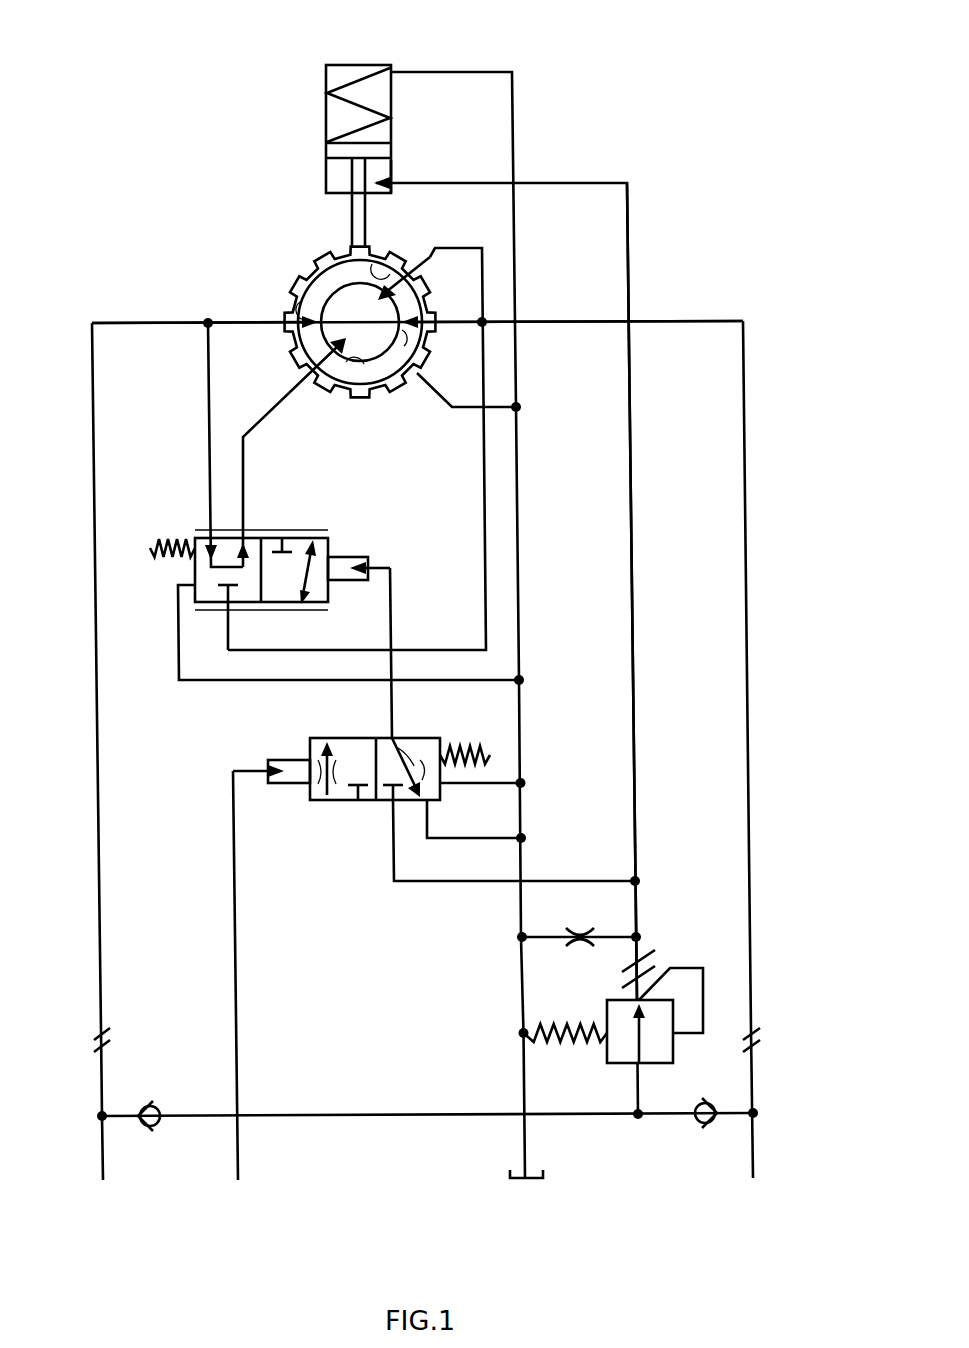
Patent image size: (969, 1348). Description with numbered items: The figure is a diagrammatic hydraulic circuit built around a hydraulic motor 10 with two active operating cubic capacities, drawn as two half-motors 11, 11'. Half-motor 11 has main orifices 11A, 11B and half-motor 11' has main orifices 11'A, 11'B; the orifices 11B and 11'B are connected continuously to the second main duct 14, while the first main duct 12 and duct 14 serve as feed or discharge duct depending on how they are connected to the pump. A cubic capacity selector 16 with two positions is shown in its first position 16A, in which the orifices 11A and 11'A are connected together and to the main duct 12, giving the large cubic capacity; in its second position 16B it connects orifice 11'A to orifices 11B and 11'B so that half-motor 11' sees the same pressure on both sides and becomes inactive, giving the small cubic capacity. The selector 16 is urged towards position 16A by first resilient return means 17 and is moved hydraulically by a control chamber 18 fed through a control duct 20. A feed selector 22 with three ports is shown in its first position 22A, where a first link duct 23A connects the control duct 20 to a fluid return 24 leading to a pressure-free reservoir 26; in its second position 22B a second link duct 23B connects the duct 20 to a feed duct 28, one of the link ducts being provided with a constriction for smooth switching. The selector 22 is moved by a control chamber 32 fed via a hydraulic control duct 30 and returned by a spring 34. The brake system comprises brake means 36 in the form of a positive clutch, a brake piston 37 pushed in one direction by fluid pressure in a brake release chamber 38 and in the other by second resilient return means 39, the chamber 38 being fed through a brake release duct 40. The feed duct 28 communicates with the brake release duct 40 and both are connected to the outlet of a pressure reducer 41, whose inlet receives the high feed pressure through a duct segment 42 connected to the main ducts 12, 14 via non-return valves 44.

The hydraulic motor 10 is at (284, 248).
The half-motor 11 is at (364, 293).
The main orifice 11A is at (296, 292).
The main orifice 11B is at (416, 280).
The main orifice 11'A is at (306, 452).
The main orifice 11'B is at (572, 352).
The half-motor 11' is at (447, 405).
The first main duct 12 is at (90, 666).
The second main duct 14 is at (764, 688).
The cubic capacity selector 16 is at (186, 500).
The first position 16A is at (216, 590).
The second position 16B is at (292, 536).
The first resilient return means 17 is at (140, 550).
The control chamber 18 is at (336, 558).
The control duct 20 is at (392, 602).
The feed selector 22 is at (338, 858).
The first position 22A is at (428, 746).
The second position 22B is at (348, 748).
The first link duct 23A is at (420, 800).
The second link duct 23B is at (320, 802).
The fluid return 24 is at (526, 802).
The pressure-free reservoir 26 is at (502, 1176).
The feed duct 28 is at (446, 880).
The hydraulic control duct 30 is at (232, 928).
The control chamber 32 is at (276, 760).
The spring 34 is at (490, 756).
The brake means 36 is at (332, 232).
The brake piston 37 is at (386, 150).
The brake release chamber 38 is at (330, 176).
The second resilient return means 39 is at (358, 70).
The brake release duct 40 is at (628, 242).
The pressure reducer 41 is at (688, 940).
The duct segment 42 is at (386, 1112).
The non-return valves 44 is at (184, 1140).